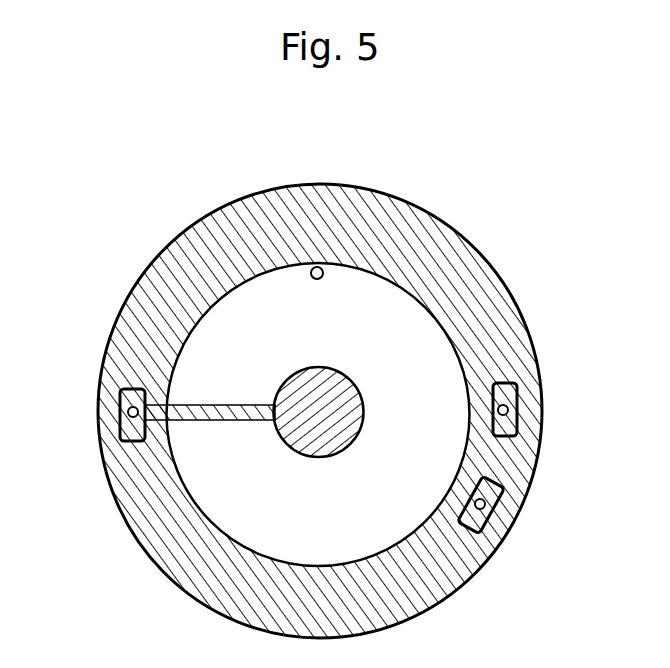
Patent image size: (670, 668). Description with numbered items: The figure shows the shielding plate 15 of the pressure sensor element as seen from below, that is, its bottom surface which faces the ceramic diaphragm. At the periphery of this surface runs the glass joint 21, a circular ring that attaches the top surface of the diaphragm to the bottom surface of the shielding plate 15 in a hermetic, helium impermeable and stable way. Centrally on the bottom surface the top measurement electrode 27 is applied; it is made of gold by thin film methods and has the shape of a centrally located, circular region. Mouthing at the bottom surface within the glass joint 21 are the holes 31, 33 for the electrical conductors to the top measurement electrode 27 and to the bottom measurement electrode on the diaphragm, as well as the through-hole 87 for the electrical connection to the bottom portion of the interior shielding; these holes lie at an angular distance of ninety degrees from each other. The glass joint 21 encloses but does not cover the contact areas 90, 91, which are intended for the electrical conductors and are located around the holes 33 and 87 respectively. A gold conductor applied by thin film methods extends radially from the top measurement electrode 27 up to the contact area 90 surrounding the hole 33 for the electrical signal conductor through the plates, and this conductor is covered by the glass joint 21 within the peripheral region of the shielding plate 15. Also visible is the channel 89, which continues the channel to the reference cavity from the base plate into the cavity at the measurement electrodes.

The shielding plate 15 is at (537, 270).
The glass joint 21 is at (175, 267).
The top measurement electrode 27 is at (333, 388).
The channel 89 is at (317, 273).
The contact area 90 is at (120, 392).
The hole 33 is at (128, 413).
The hole 31 is at (508, 408).
The through-hole 87 is at (487, 505).
The contact area 91 is at (492, 536).